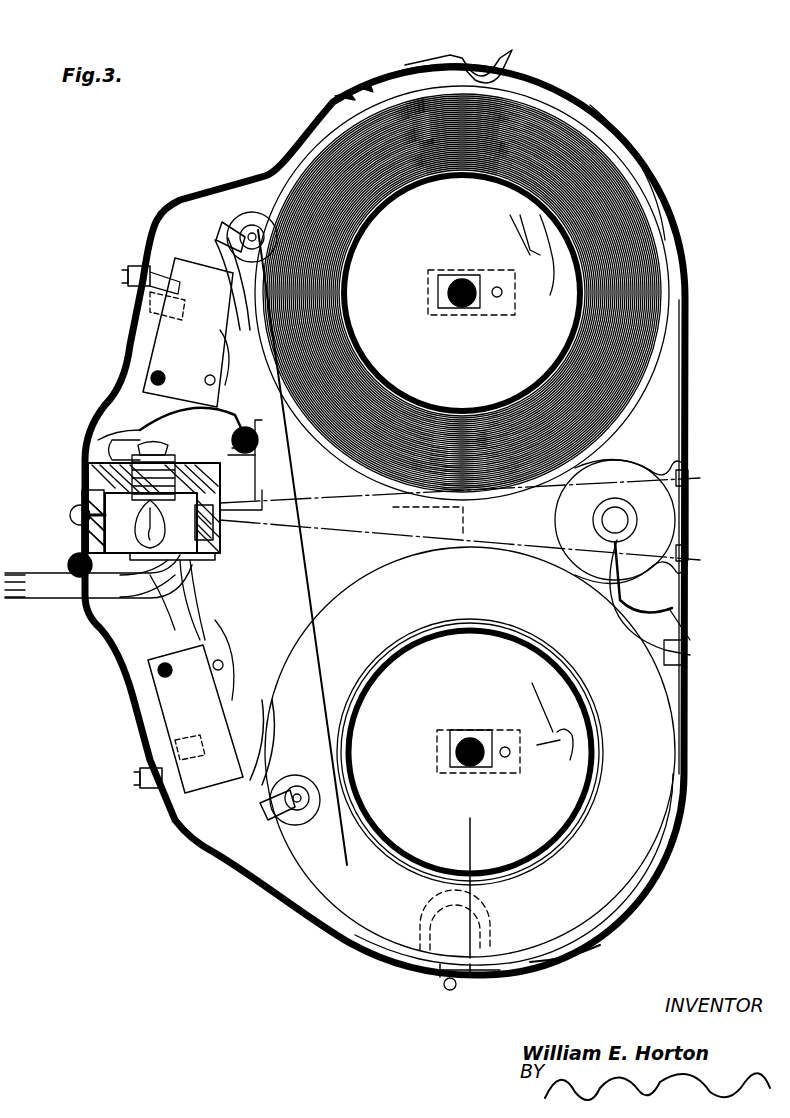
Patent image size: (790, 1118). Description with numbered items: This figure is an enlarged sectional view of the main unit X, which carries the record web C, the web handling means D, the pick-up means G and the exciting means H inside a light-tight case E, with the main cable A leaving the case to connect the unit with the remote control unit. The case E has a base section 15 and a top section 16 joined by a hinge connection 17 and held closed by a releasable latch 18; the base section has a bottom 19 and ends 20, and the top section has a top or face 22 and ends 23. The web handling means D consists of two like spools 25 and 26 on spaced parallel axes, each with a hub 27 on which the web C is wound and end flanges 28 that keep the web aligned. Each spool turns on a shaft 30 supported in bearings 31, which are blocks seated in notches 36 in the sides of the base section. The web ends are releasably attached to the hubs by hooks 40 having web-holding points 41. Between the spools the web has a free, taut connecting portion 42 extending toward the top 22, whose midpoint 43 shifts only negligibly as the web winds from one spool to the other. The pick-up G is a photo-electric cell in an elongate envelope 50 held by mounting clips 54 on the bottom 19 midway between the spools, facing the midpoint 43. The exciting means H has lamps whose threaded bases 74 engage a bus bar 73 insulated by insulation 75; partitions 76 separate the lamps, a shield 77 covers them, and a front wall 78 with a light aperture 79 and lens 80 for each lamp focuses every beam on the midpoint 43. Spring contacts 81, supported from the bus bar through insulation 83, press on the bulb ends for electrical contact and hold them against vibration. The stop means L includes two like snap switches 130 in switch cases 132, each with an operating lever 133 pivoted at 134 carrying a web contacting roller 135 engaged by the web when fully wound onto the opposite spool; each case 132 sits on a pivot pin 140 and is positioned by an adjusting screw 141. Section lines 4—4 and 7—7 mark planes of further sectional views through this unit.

The section line 4— 4 is at (451, 1030).
The base section 15 is at (656, 905).
The top section 16 is at (348, 952).
The hinge connection 17 is at (443, 983).
The releasable latch 18 is at (456, 55).
The bottom 19 is at (690, 388).
The ends 20 is at (518, 72).
The top or face 22 is at (135, 710).
The ends 23 is at (335, 97).
The spool 25 is at (690, 257).
The spool 26 is at (690, 782).
The hub 27 is at (372, 366).
The end flanges 28 is at (642, 205).
The shaft 30 is at (445, 293).
The bearings 31 is at (470, 266).
The notches 36 is at (470, 305).
The hooks 40 is at (520, 225).
The web-holding points 41 is at (555, 712).
The connecting portion 42 is at (303, 507).
The midpoint 43 is at (300, 535).
The envelope 50 is at (680, 520).
The mounting clips 54 is at (640, 466).
The bus bar 73 is at (90, 487).
The threaded bases 74 is at (210, 472).
The insulation 75 is at (82, 526).
The partitions 76 is at (175, 585).
The shield 77 is at (78, 562).
The front wall 78 is at (212, 484).
The light aperture 79 is at (212, 562).
The lens 80 is at (215, 530).
The spring contacts 81 is at (184, 433).
The insulation 83 is at (258, 453).
The switches 130 is at (148, 348).
The switch case 132 is at (193, 525).
The operating lever 133 is at (222, 258).
The pivot 134 is at (207, 378).
The web contacting roller 135 is at (245, 217).
The pivot pin 140 is at (152, 378).
The adjusting screw 141 is at (130, 272).
The main cable A is at (50, 605).
The record web C is at (304, 598).
The web handling means D is at (660, 720).
The case E is at (592, 102).
The pick-up means G is at (617, 478).
The exciting means H is at (110, 472).
The stop means L is at (162, 323).
The main unit X is at (305, 103).
The section line 7— 7 is at (145, 422).